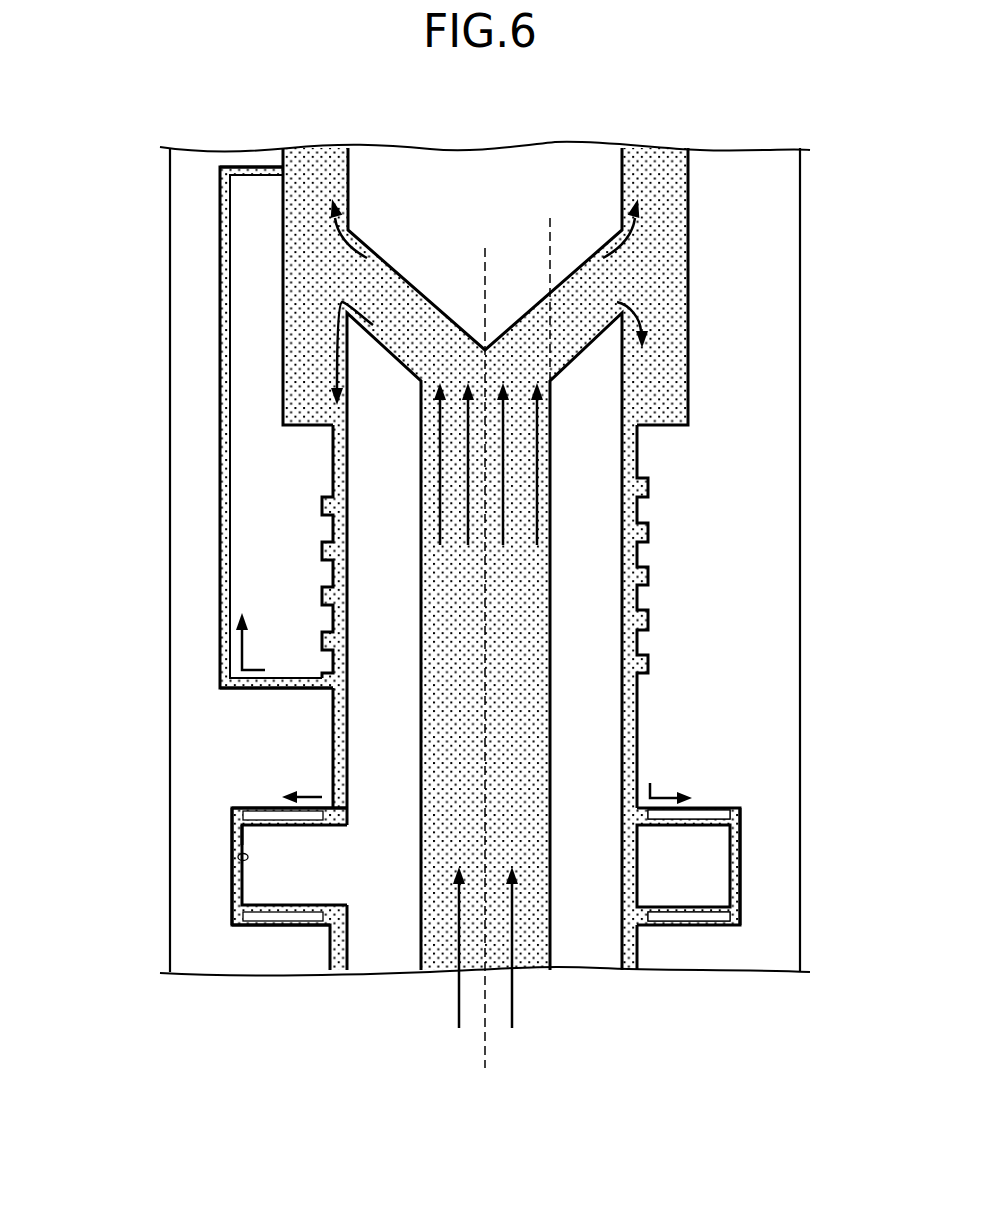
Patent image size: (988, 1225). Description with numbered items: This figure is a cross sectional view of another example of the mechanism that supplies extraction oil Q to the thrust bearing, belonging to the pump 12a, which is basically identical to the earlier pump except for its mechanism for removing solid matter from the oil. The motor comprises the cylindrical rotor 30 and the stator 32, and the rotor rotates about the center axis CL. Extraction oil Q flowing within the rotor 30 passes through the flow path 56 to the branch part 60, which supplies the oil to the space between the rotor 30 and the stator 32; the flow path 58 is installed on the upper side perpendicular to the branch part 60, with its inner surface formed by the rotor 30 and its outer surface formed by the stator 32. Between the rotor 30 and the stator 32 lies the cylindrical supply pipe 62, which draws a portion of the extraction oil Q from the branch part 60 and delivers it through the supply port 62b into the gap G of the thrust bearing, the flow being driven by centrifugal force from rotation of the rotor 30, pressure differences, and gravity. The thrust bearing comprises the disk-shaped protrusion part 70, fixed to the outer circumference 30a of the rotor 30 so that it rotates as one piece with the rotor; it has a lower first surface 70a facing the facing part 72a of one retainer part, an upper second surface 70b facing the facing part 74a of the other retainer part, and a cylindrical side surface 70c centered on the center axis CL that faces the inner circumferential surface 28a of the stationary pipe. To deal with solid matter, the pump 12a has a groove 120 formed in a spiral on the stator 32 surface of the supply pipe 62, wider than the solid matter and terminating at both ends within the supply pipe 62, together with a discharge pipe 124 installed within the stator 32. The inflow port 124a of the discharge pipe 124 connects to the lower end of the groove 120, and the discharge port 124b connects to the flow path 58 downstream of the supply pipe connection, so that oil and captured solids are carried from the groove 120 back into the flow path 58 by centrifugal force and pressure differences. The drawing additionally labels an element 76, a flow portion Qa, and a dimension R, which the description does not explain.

The pump 12a is at (130, 153).
The discharge port 124b is at (274, 168).
The flow path 58 is at (330, 156).
The branch part 60 is at (377, 270).
The supply pipe 62 is at (667, 328).
The groove 120 is at (322, 502).
The discharge pipe 124 is at (226, 557).
The inflow port 124a is at (330, 693).
The stator 32 is at (788, 553).
The flow path 56 is at (515, 637).
The seal 76 is at (276, 813).
The second surface 70b is at (270, 823).
The facing part 74a is at (250, 832).
The inner circumferential surface 28a is at (238, 857).
The side surface 70c is at (232, 878).
The facing part 72a is at (258, 907).
The protrusion part 70 is at (282, 885).
The first surface 70a is at (308, 920).
The rotor 30 is at (390, 958).
The supply port 62b is at (632, 822).
The outer circumference 30a is at (637, 933).
The gap G is at (755, 863).
The branched flow Qa is at (642, 277).
The extraction oil Q is at (647, 308).
The center axis CL is at (484, 248).
The radius R is at (542, 230).